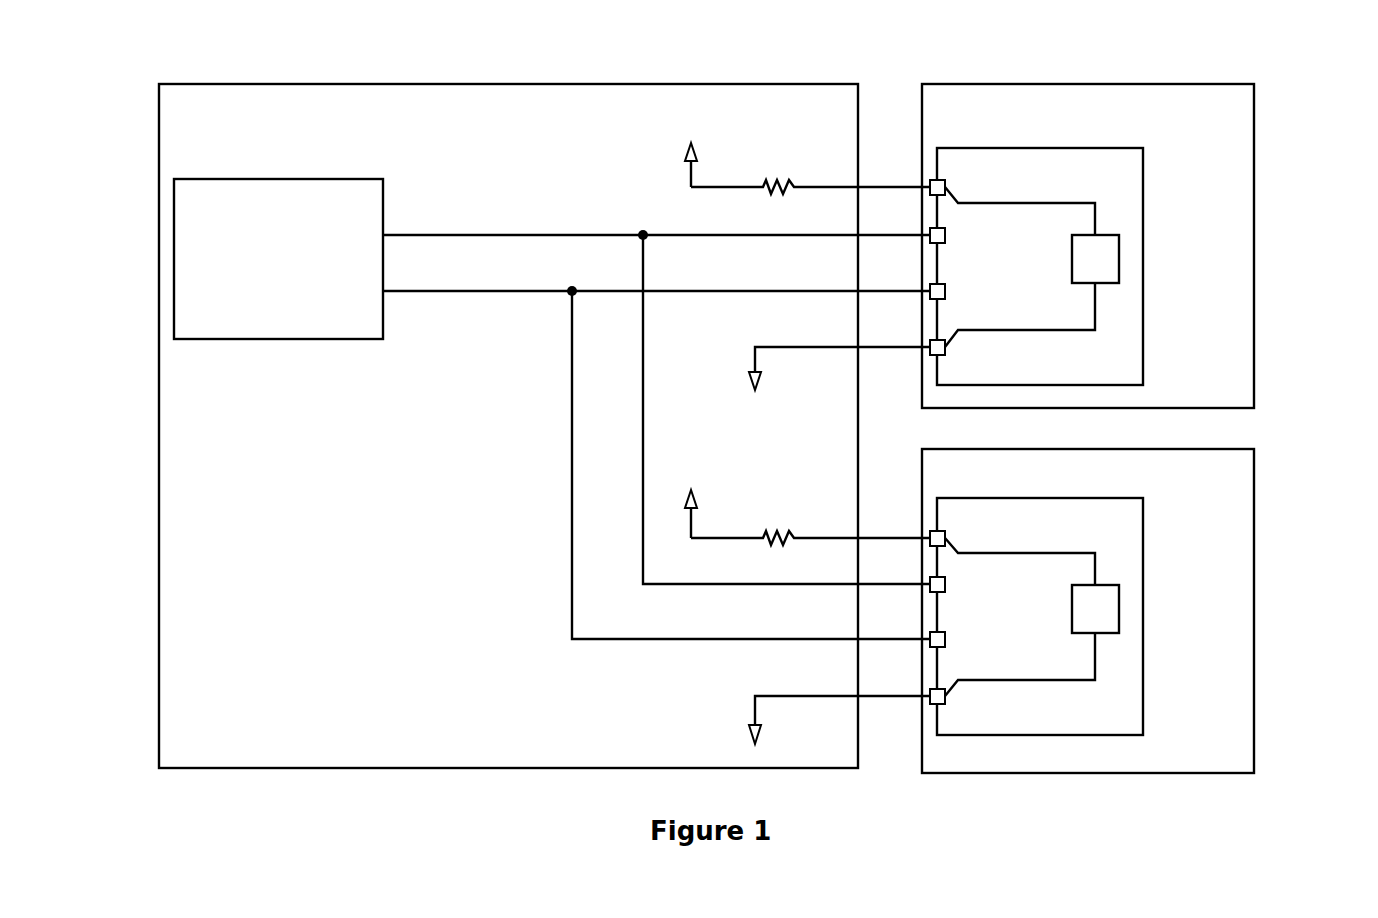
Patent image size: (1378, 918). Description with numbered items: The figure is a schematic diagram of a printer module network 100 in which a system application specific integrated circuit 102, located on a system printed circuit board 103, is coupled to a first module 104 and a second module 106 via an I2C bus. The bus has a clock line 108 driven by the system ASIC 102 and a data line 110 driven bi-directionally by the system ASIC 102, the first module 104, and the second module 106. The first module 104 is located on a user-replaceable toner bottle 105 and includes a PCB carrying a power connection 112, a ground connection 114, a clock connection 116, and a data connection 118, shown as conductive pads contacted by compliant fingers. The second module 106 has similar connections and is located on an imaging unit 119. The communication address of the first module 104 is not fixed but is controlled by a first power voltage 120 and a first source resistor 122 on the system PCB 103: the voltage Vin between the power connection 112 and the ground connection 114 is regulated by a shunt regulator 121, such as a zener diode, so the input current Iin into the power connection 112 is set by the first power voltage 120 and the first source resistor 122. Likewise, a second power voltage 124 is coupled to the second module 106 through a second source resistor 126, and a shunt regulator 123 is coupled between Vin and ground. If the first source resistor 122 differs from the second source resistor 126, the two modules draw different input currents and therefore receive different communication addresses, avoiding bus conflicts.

The printer module network 100 is at (1286, 70).
The system application specific integrated circuit (ASIC) 102 is at (330, 179).
The system printed circuit board (PCB) 103 is at (305, 84).
The first module 104 is at (1053, 259).
The toner bottle 105 is at (1254, 300).
The second module 106 is at (1086, 597).
The clock line 108 is at (468, 235).
The data line 110 is at (497, 291).
The power connection 112 is at (945, 180).
The ground connection 114 is at (930, 355).
The clock connection 116 is at (930, 243).
The data connection 118 is at (930, 299).
The imaging unit 119 is at (1254, 605).
The first power voltage 120 is at (692, 142).
The shunt regulator 121 is at (1119, 240).
The first source resistor 122 is at (787, 186).
The shunt regulator 123 is at (1119, 590).
The second power voltage 124 is at (692, 490).
The second source resistor 126 is at (787, 536).